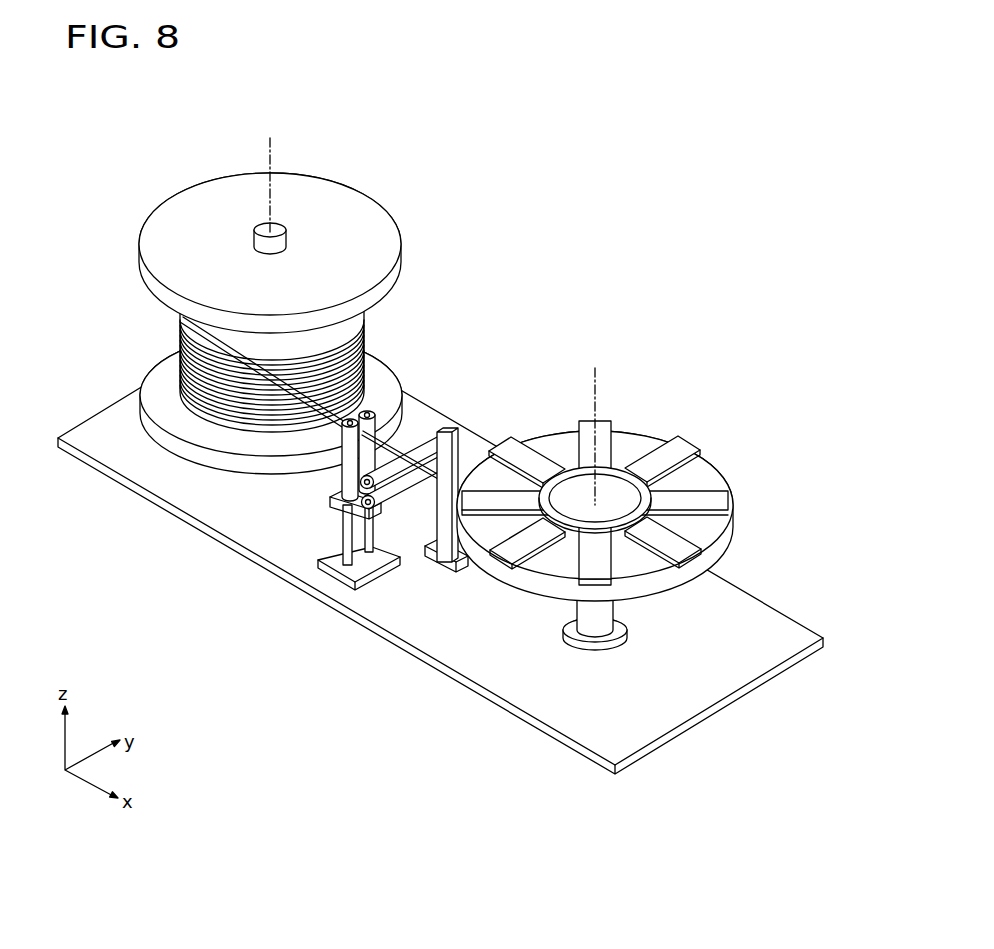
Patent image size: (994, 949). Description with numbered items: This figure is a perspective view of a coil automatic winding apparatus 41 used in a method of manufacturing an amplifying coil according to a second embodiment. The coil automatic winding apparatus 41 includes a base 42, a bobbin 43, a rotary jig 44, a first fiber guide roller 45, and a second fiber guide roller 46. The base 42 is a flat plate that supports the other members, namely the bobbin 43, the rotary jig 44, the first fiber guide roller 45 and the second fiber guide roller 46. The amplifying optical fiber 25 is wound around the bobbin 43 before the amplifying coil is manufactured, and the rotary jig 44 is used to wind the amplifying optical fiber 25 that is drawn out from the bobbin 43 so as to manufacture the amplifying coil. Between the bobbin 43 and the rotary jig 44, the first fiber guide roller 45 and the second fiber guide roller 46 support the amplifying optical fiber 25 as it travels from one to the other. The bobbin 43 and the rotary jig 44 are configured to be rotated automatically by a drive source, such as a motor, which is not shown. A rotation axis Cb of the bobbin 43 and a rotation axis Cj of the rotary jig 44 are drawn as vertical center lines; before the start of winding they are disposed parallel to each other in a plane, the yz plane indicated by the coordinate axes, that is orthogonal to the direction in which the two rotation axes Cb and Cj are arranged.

The coil automatic winding apparatus 41 is at (571, 166).
The base 42 is at (751, 628).
The bobbin 43 is at (329, 216).
The rotary jig 44 is at (559, 445).
The first fiber guide roller 45 is at (340, 480).
The second fiber guide roller 46 is at (396, 490).
The amplifying optical fiber 25 is at (151, 367).
The rotation axis of the bobbin Cb is at (270, 157).
The rotation axis of the rotary jig Cj is at (592, 378).